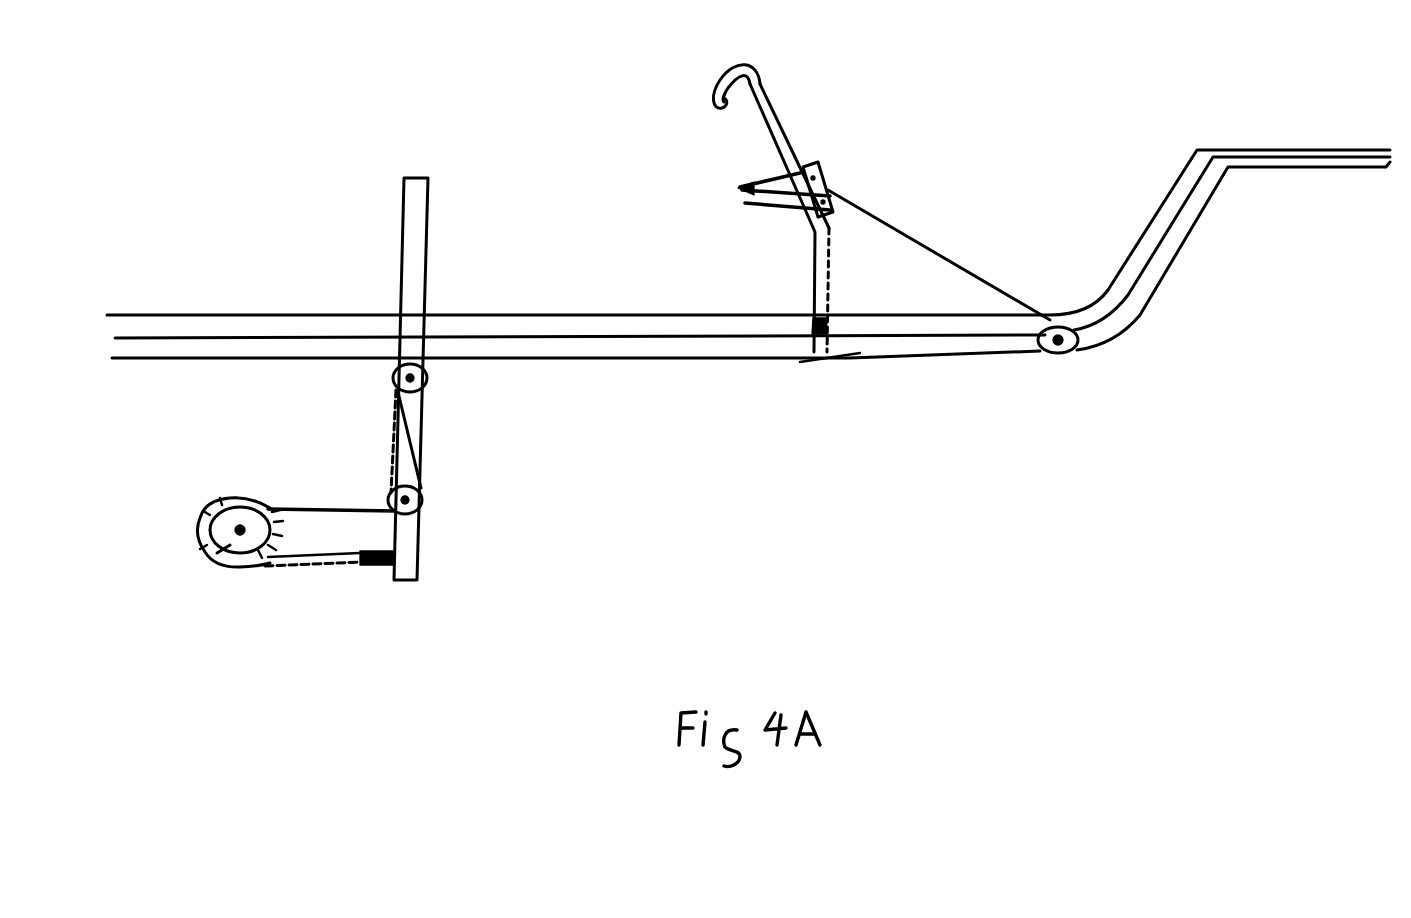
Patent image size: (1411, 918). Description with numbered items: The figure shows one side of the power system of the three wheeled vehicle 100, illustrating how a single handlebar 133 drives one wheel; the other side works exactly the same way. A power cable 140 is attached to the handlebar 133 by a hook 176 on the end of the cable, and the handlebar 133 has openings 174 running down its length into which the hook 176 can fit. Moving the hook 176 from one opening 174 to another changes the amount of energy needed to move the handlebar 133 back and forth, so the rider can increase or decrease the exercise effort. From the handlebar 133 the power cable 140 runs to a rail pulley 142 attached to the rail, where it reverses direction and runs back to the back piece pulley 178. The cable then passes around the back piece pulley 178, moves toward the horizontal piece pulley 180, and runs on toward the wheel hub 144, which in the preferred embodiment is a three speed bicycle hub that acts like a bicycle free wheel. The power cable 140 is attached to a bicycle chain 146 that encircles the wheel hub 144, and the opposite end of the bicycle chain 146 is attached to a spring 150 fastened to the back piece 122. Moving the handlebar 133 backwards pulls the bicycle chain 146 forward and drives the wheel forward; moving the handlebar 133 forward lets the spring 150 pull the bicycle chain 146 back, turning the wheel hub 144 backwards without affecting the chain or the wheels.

The 3 wheeled vehicle 100 is at (1164, 266).
The back piece 122 is at (419, 181).
The handlebar 133 is at (772, 101).
The power cable 140 is at (935, 245).
The rail pulley 142 is at (1068, 353).
The wheel hub 144 is at (207, 557).
The bicycle chain 146 is at (273, 567).
The spring 150 is at (372, 567).
The openings 174 is at (742, 200).
The hook 176 is at (830, 188).
The back piece pulley 178 is at (426, 385).
The horizontal piece pulley 180 is at (423, 503).